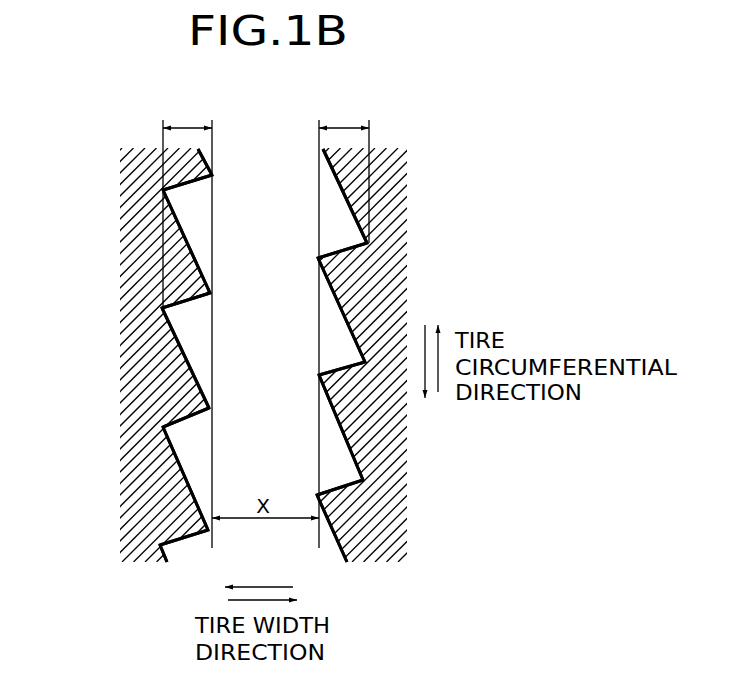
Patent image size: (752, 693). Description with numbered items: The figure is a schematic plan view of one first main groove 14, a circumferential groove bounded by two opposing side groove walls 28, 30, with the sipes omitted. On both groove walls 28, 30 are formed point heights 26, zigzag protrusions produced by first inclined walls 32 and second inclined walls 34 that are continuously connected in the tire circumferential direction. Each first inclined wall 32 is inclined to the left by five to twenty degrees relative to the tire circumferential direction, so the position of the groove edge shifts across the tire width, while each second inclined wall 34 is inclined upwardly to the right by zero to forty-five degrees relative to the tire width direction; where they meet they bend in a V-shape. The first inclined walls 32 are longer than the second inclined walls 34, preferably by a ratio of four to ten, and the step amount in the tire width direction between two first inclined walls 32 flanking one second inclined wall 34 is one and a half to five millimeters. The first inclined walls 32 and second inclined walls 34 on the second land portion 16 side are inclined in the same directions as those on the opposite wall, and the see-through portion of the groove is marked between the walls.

The first main groove 14 is at (263, 170).
The second land portion 16 is at (392, 197).
The point heights 26 is at (186, 210).
The groove wall 28 is at (194, 365).
The groove wall 30 is at (338, 327).
The first inclined wall 32 is at (182, 228).
The second inclined wall 34 is at (187, 300).